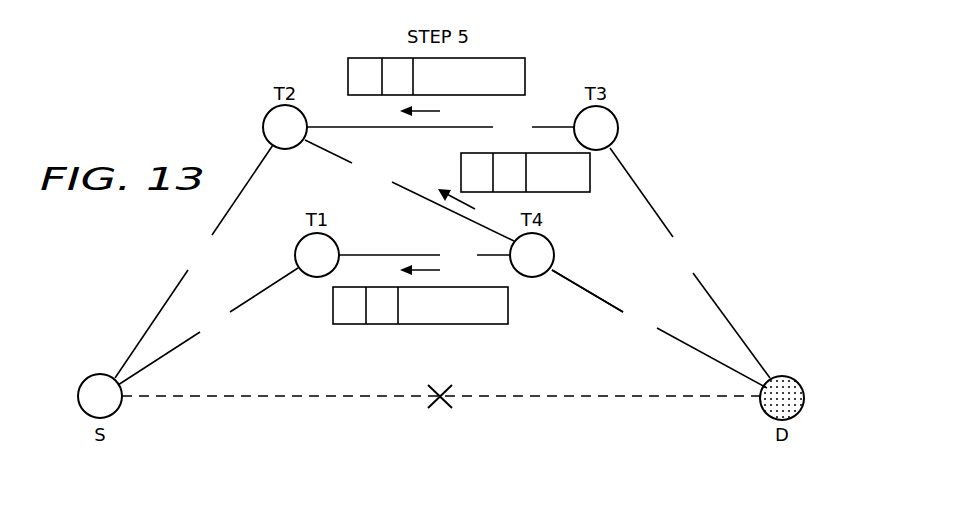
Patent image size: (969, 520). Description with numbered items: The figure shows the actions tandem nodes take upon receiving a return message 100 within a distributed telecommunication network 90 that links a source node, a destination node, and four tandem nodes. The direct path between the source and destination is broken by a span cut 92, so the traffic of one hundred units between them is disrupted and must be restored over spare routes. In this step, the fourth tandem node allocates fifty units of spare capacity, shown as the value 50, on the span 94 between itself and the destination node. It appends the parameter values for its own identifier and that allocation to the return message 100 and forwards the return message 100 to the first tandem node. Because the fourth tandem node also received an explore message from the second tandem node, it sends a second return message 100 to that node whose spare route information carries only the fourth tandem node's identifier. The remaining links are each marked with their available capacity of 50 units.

The units of spare capacity 50 is at (442, 253).
The distributed telecommunication network 90 is at (708, 135).
The span cut 92 is at (440, 388).
The span 94 is at (593, 293).
The return message 100 is at (507, 58).